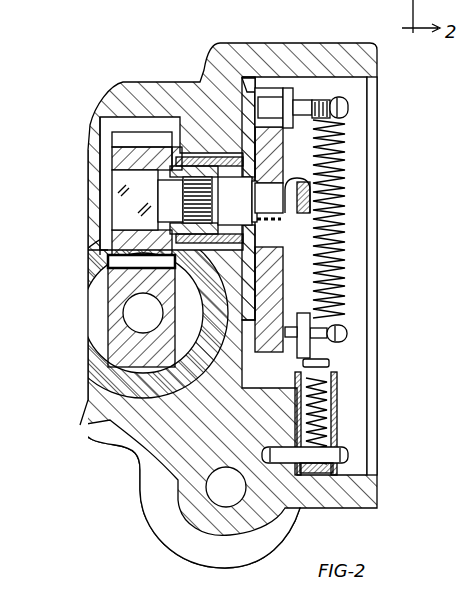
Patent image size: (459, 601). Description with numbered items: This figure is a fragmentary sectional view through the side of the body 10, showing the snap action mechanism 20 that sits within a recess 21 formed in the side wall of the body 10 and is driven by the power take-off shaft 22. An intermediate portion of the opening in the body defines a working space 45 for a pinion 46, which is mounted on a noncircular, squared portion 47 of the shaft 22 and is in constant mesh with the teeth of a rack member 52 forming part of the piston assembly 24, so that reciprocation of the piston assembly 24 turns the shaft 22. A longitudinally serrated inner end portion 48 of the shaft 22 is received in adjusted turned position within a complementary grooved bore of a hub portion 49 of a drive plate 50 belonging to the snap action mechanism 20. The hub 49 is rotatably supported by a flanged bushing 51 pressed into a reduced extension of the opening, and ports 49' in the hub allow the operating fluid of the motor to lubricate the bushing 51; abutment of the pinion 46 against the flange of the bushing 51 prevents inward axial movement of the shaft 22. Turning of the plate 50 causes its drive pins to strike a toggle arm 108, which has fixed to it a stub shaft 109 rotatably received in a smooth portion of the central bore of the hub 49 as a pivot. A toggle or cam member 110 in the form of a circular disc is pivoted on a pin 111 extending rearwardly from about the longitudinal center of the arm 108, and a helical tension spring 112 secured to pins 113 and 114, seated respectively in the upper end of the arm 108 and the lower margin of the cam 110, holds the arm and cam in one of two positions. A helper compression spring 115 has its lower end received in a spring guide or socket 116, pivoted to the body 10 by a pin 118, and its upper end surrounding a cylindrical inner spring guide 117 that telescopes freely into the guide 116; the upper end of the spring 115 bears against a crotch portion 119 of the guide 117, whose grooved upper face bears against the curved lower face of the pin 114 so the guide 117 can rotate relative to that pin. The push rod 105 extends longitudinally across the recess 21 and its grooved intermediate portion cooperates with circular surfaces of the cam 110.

The body 10 is at (122, 82).
The snap action mechanism 20 is at (366, 268).
The recess 21 is at (357, 97).
The power take-off shaft 22 is at (97, 218).
The piston assembly 24 is at (92, 307).
The working space 45 is at (110, 118).
The pinion 46 is at (118, 150).
The noncircular portion 47 is at (123, 180).
The serrated inner end portion 48 is at (187, 199).
The hub portion 49 is at (191, 105).
The ports 49' is at (209, 126).
The drive plate 50 is at (245, 78).
The flanged bushing 51 is at (200, 150).
The rack member 52 is at (115, 337).
The push rod 105 is at (305, 205).
The toggle arm 108 is at (267, 90).
The stub shaft 109 is at (237, 201).
The cam member 110 is at (290, 292).
The pin 111 is at (273, 214).
The helical tension spring 112 is at (347, 172).
The pin 113 is at (313, 104).
The pin 114 is at (343, 333).
The compression spring 115 is at (337, 418).
The spring guide 116 is at (337, 470).
The inner spring guide 117 is at (323, 365).
The pin 118 is at (343, 455).
The crotch portion 119 is at (317, 350).